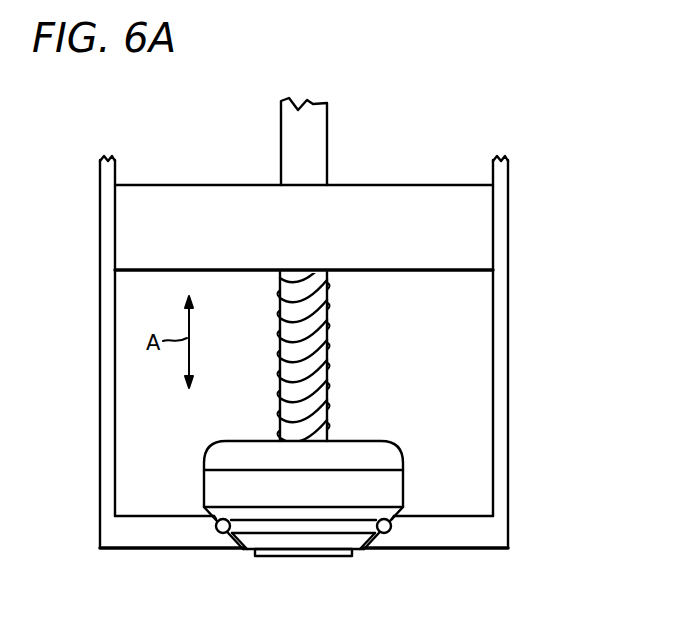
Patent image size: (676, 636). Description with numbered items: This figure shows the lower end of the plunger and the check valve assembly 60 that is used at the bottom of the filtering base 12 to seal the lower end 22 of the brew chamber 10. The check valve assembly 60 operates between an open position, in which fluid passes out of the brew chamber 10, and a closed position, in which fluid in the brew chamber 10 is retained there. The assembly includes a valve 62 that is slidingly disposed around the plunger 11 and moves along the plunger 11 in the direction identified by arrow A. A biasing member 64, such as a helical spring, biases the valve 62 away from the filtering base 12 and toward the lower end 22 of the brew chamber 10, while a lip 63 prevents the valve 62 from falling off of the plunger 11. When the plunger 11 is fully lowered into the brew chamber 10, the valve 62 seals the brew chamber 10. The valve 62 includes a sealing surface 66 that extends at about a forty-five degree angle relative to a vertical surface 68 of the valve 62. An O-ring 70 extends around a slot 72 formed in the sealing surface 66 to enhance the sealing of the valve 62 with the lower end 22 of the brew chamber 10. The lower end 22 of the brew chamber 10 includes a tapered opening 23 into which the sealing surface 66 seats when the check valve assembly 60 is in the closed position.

The brew chamber 10 is at (132, 300).
The plunger 11 is at (302, 351).
The filtering base 12 is at (493, 229).
The lower end of brew chamber 22 is at (508, 503).
The tapered opening 23 is at (386, 548).
The check valve assembly 60 is at (414, 364).
The valve 62 is at (309, 495).
The lip 63 is at (317, 557).
The biasing member 64 is at (280, 390).
The sealing surface 66 is at (205, 518).
The vertical surface 68 is at (208, 484).
The O-ring 70 is at (221, 535).
The slot 72 is at (386, 516).